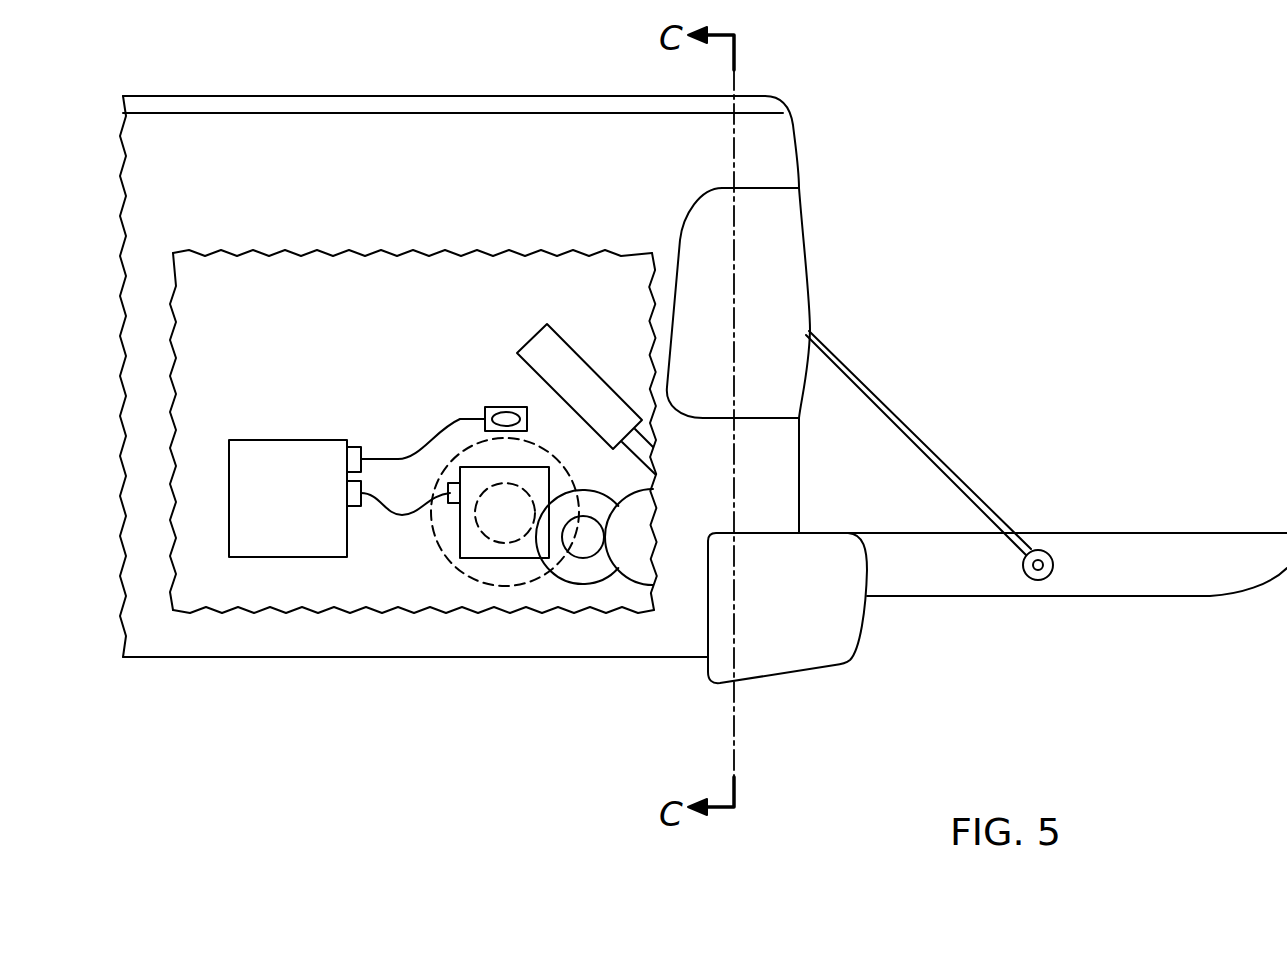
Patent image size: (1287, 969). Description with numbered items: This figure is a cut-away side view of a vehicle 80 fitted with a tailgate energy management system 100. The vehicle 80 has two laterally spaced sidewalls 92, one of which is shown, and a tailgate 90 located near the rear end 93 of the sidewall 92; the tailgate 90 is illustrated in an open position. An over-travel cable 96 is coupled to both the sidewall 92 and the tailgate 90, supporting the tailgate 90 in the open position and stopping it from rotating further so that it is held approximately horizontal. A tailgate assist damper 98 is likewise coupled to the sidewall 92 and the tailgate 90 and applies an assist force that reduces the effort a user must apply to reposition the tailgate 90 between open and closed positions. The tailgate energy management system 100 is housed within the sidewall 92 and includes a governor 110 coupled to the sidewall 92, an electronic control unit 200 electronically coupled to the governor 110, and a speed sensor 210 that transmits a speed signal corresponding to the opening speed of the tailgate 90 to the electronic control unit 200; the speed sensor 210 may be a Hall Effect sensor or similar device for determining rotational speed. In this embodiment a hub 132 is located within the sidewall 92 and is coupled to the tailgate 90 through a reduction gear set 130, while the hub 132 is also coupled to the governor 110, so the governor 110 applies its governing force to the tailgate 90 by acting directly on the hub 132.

The vehicle 80 is at (802, 251).
The tailgate 90 is at (1221, 597).
The sidewall 92 is at (453, 70).
The rear end 93 is at (768, 98).
The over-travel cable 96 is at (888, 410).
The tailgate assist damper 98 is at (580, 348).
The tailgate energy management system 100 is at (413, 431).
The governor 110 is at (470, 561).
The reduction gear set 130 is at (583, 585).
The hub 132 is at (438, 534).
The electronic control unit 200 is at (287, 440).
The speed sensor 210 is at (492, 407).